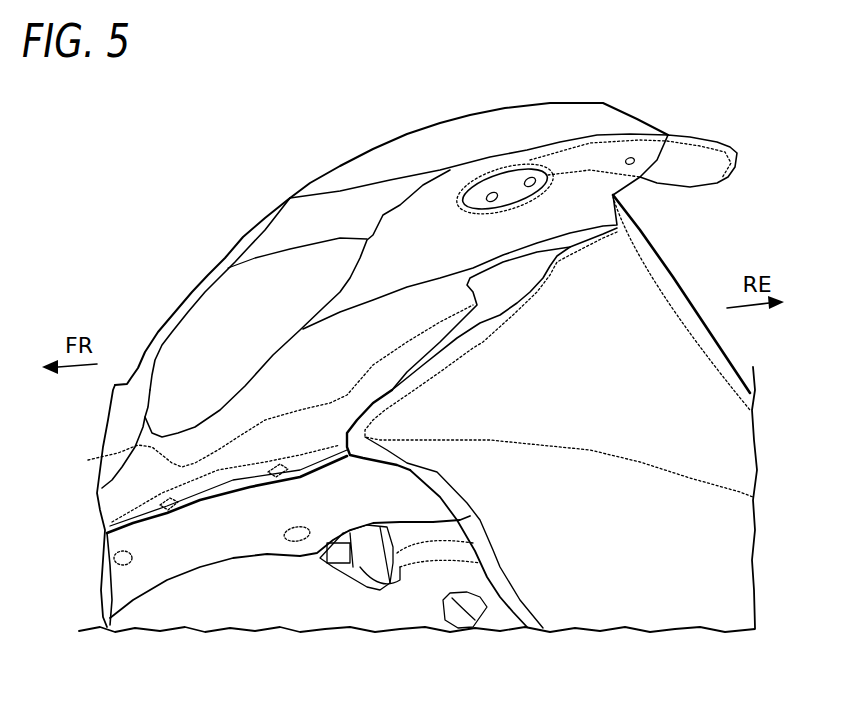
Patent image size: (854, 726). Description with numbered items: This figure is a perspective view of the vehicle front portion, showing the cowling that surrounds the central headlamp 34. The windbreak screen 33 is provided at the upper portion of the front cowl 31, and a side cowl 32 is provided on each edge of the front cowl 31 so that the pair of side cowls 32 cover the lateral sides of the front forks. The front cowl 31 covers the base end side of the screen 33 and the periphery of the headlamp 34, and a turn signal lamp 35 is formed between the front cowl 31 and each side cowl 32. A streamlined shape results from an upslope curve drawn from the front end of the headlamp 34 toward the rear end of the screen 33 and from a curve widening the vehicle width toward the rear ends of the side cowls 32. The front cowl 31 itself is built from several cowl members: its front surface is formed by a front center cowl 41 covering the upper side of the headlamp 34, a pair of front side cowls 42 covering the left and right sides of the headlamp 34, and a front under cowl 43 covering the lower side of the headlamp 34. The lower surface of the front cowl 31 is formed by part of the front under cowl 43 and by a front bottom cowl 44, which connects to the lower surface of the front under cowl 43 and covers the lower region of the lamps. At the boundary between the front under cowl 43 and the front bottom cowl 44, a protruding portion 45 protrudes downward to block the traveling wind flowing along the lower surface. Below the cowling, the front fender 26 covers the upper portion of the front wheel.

The front fender 26 is at (110, 616).
The front cowl 31 is at (246, 202).
The side cowl 32 is at (93, 528).
The windbreak screen 33 is at (547, 100).
The central headlamp 34 is at (192, 327).
The turn signal lamp 35 is at (110, 412).
The front center cowl 41 is at (302, 210).
The front side cowl 42 is at (587, 161).
The front under cowl 43 is at (88, 460).
The front bottom cowl 44 is at (262, 540).
The protruding portion 45 is at (210, 500).